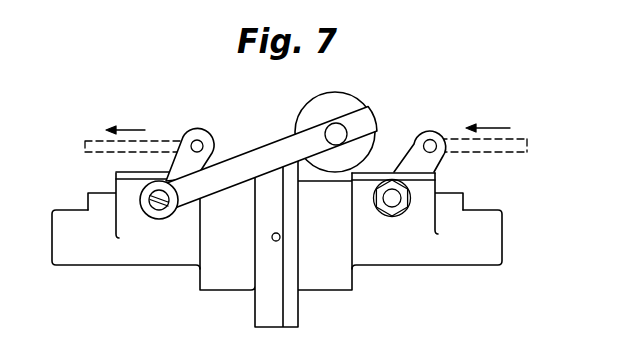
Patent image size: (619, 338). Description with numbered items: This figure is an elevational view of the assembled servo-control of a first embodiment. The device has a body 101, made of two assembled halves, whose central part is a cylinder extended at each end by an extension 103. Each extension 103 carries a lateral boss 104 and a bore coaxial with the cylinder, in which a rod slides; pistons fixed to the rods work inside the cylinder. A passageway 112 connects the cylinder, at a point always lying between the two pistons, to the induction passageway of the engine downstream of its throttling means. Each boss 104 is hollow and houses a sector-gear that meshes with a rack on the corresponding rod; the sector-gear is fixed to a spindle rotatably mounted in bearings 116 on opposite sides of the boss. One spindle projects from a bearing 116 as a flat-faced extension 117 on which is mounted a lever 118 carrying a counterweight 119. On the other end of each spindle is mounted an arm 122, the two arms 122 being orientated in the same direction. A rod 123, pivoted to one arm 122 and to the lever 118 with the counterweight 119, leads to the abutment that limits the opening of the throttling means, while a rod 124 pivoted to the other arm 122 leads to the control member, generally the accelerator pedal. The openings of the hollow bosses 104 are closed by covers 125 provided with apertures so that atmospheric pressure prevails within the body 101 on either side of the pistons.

The body 101 is at (190, 268).
The extension 103 is at (60, 256).
The lateral boss 104 is at (128, 218).
The passageway 112 is at (273, 241).
The bearing 116 is at (152, 218).
The flat-faced extension 117 is at (160, 181).
The lever 118 is at (253, 162).
The counterweight 119 is at (330, 100).
The arm 122 is at (205, 133).
The rod 123 is at (97, 141).
The rod 124 is at (513, 143).
The cover 125 is at (133, 173).